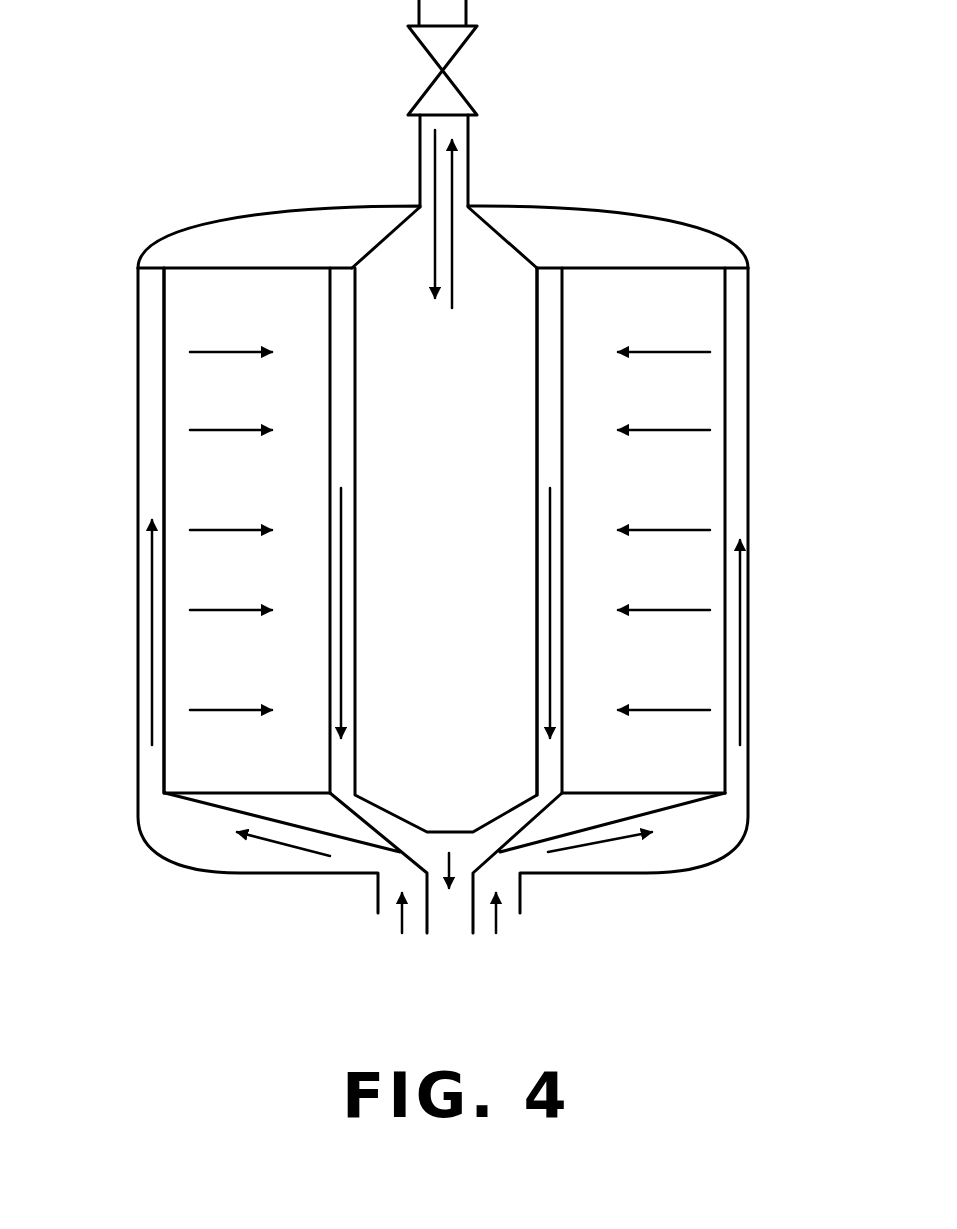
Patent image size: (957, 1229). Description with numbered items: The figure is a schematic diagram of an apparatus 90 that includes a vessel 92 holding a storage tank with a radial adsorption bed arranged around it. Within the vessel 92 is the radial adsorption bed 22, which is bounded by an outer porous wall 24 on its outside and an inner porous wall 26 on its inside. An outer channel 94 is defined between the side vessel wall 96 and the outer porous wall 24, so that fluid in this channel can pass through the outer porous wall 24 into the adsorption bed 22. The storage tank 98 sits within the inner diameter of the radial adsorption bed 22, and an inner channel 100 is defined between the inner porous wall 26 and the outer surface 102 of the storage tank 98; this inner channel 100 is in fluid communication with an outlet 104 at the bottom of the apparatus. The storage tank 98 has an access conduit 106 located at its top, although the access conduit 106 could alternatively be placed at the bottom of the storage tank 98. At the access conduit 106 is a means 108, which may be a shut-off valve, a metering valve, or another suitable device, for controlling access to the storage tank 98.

The apparatus 90 is at (730, 132).
The vessel 92 is at (756, 305).
The outer channel 94 is at (152, 468).
The side vessel wall 96 is at (752, 582).
The storage tank 98 is at (540, 452).
The inner channel 100 is at (340, 467).
The outer surface of storage tank 102 is at (540, 657).
The outlet 104 is at (440, 903).
The access conduit 106 is at (468, 152).
The means at access conduit 108 is at (444, 42).
The radial adsorption bed 22 is at (733, 491).
The outer porous wall 24 is at (168, 658).
The inner porous wall 26 is at (330, 590).